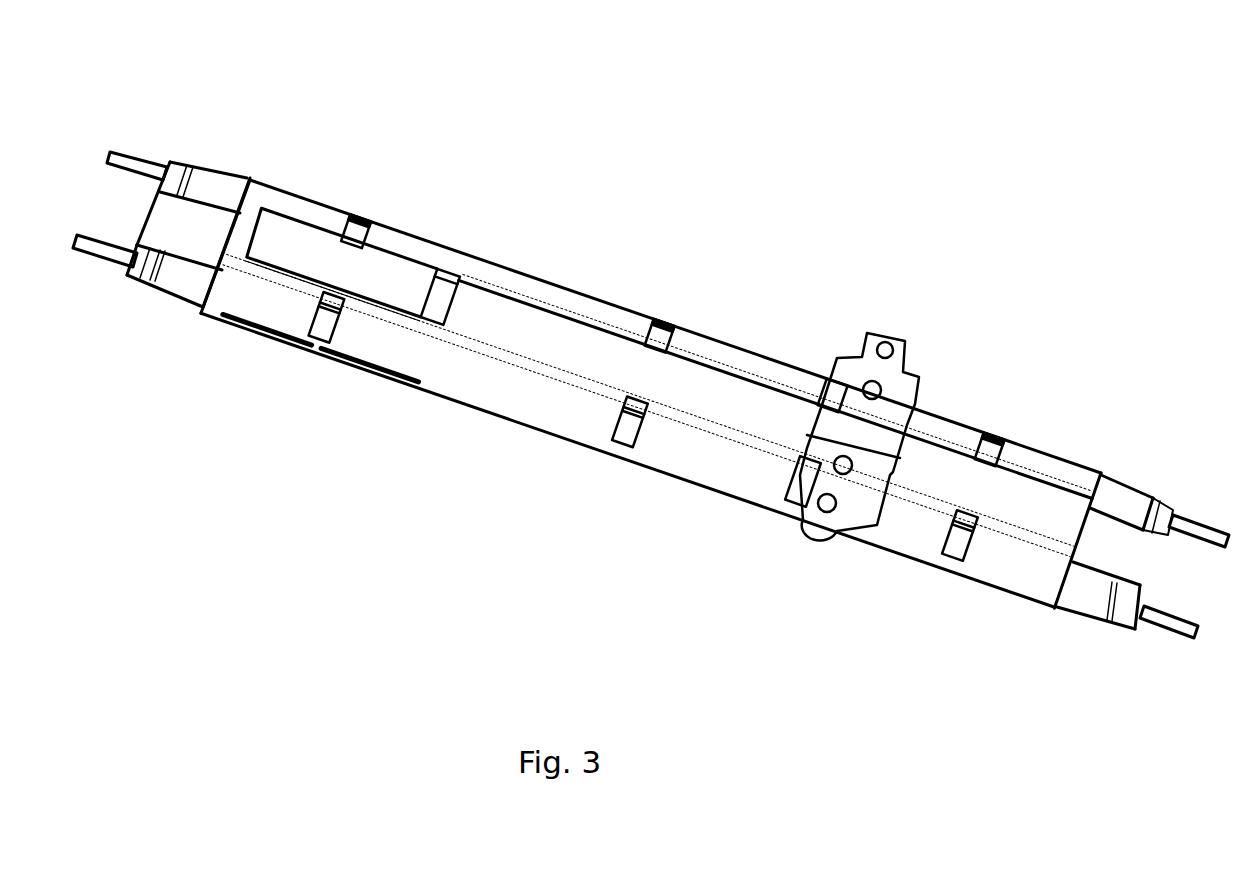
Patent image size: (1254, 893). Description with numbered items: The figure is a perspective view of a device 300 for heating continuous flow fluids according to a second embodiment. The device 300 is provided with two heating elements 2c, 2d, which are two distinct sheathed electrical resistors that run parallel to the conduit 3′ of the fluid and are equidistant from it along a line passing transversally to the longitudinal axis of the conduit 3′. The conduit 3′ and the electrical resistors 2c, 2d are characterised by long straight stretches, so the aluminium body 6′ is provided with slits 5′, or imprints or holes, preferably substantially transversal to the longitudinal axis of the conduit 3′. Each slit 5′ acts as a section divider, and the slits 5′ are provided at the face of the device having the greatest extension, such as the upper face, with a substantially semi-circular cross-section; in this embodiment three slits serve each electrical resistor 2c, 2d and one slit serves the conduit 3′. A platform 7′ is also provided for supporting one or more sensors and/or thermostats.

The device for heating continuous flow fluids 300 is at (938, 166).
The aluminium body 6′ is at (578, 300).
The platform 7′ is at (348, 265).
The slits 5′ is at (355, 232).
The conduit 3′ is at (185, 222).
The heating element 2d is at (1128, 502).
The heating element 2c is at (1100, 595).